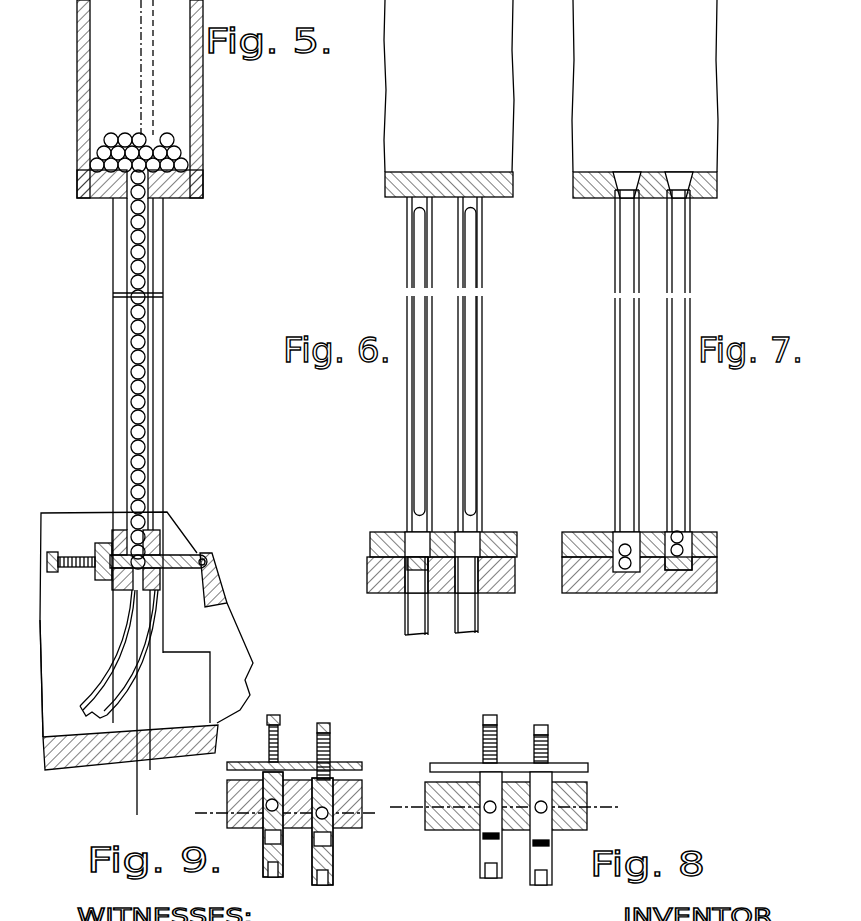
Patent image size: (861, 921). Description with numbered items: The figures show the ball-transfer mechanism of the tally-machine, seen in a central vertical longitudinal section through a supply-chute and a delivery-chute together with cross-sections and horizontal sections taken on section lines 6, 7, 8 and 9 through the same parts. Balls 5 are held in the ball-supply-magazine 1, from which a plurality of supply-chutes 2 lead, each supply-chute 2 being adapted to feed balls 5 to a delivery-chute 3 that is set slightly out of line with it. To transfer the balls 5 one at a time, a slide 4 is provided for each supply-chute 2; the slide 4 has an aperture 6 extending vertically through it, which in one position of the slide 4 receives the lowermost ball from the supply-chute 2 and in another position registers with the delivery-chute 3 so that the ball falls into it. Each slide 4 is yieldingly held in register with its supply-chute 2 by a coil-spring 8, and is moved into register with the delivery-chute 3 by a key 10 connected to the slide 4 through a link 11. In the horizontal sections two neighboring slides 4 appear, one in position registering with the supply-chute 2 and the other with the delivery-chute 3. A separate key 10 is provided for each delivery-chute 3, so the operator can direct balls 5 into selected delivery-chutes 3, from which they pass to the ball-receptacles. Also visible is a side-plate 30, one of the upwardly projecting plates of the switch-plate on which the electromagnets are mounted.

In FIG. 5, the ball-supply-magazine 1 is at (187, 100).
In FIG. 6, the ball-supply-magazine 1 is at (449, 98).
In FIG. 7, the ball-supply-magazine 1 is at (645, 99).
In FIG. 5, the supply-chute 2 is at (145, 267).
In FIG. 6, the supply-chute 2 is at (465, 248).
In FIG. 7, the supply-chute 2 is at (680, 256).
In FIG. 5, the delivery-chute 3 is at (140, 638).
In FIG. 6, the delivery-chute 3 is at (462, 633).
In FIG. 5, the slide 4 is at (165, 558).
In FIG. 7, the slide 4 is at (675, 570).
In FIG. 9, the slide 4 is at (263, 838).
In FIG. 8, the slide 4 is at (480, 835).
In FIG. 5, the balls 5 is at (145, 368).
In FIG. 7, the balls 5 is at (615, 532).
In FIG. 5, the aperture 6 is at (162, 547).
In FIG. 9, the aperture 6 is at (284, 799).
In FIG. 5, the base plate 7 is at (137, 767).
In FIG. 8, the base plate 7 is at (513, 796).
In FIG. 5, the coil-spring 8 is at (78, 575).
In FIG. 6, the coil-spring 8 is at (562, 553).
In FIG. 7, the coil-spring 8 is at (745, 551).
In FIG. 9, the coil-spring 8 is at (318, 750).
In FIG. 8, the coil-spring 8 is at (532, 745).
In FIG. 6, the block section 9 is at (533, 562).
In FIG. 5, the key 10 is at (227, 598).
In FIG. 5, the link 11 is at (205, 560).
In FIG. 9, the link 11 is at (330, 885).
In FIG. 8, the link 11 is at (535, 885).
In FIG. 5, the side-plates 30 is at (75, 525).